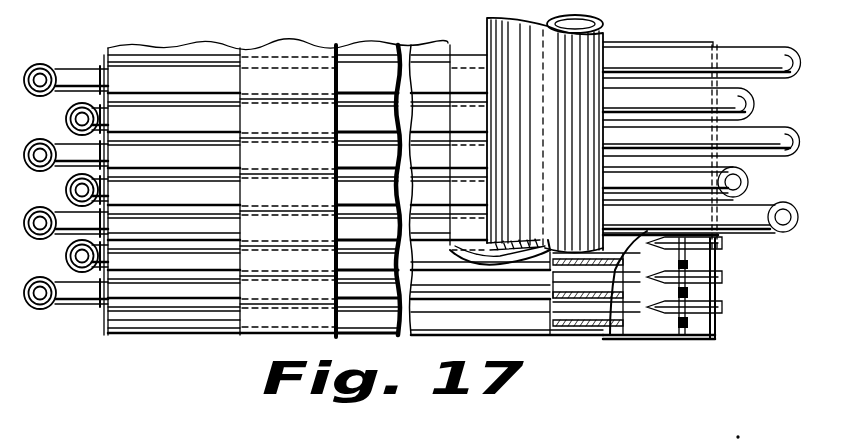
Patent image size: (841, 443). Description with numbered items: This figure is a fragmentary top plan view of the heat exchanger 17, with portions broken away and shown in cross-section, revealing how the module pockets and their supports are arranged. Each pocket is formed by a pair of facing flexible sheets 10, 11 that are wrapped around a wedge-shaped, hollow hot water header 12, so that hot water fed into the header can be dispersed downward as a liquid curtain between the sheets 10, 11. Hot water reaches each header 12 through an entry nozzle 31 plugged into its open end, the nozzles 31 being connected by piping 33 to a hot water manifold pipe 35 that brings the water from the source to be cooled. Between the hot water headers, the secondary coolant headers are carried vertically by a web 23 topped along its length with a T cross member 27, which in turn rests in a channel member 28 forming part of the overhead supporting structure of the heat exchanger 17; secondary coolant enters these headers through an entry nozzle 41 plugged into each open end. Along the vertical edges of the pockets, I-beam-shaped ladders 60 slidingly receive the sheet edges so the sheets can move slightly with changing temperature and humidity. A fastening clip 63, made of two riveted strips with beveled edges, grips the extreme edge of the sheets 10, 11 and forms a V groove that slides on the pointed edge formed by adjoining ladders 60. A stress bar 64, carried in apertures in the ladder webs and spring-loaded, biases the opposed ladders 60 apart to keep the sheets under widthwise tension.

The heat exchanger 17 is at (169, 37).
The T cross member 27 is at (217, 73).
The hot water header 12 is at (351, 100).
The channel member 28 is at (399, 46).
The hot water manifold pipe 35 is at (462, 45).
The piping 33 is at (744, 55).
The entry nozzle 31 is at (738, 232).
The fastening clip 63 is at (720, 281).
The stress bar 64 is at (710, 323).
The I-beam-shaped ladder 60 is at (130, 340).
The sheet 10 is at (618, 340).
The sheet 11 is at (618, 340).
The web 23 is at (558, 333).
The entry nozzle 41 is at (85, 283).